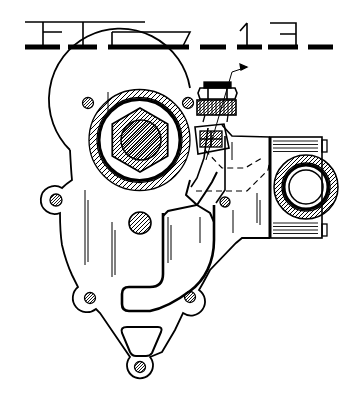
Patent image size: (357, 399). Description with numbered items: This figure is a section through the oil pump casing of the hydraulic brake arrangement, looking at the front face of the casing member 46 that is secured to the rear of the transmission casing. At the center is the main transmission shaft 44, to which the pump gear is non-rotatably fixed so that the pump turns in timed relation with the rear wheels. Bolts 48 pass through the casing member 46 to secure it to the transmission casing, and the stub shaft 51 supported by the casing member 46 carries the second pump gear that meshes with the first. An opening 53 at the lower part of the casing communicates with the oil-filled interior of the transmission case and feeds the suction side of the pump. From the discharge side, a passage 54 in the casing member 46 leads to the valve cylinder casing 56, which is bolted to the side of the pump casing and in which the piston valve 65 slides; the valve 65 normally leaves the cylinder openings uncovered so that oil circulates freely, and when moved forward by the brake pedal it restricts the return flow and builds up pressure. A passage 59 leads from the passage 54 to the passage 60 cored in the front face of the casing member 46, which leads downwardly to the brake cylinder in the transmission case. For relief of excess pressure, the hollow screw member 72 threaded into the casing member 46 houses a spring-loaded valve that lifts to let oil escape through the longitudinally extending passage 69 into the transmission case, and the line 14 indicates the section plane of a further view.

The section line 14- 14 is at (228, 174).
The main transmission shaft 44 is at (132, 141).
The casing member 46 is at (118, 72).
The bolts 48 is at (83, 100).
The stub shaft 51 is at (140, 234).
The opening 53 is at (145, 340).
The passage 54 is at (262, 160).
The valve cylinder casing 56 is at (302, 137).
The passage 59 is at (198, 200).
The passage 60 is at (193, 250).
The piston valve 65 is at (290, 187).
The passage 69 is at (229, 132).
The hollow screw member 72 is at (216, 80).